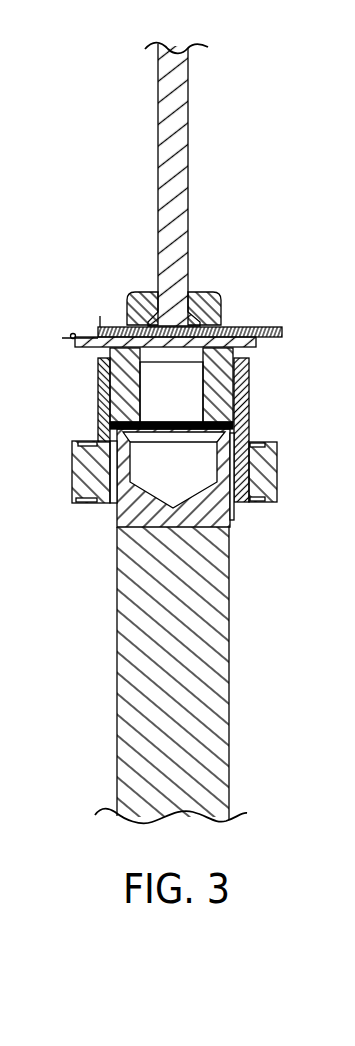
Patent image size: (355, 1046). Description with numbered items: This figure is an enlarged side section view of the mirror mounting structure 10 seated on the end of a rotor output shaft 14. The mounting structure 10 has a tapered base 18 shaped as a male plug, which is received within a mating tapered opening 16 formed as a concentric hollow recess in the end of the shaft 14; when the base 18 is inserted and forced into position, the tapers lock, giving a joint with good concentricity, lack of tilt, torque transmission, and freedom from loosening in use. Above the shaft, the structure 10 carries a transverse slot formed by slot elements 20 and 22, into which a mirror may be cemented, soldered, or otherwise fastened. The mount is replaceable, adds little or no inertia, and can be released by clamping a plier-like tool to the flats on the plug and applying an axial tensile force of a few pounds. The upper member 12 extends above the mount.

The mirror mounting structure 10 is at (148, 354).
The upper shaft 12 is at (183, 168).
The rotor output shaft 14 is at (229, 683).
The tapered opening 16 is at (98, 415).
The tapered base 18 is at (118, 387).
The slot element 20 is at (210, 290).
The slot element 22 is at (140, 290).